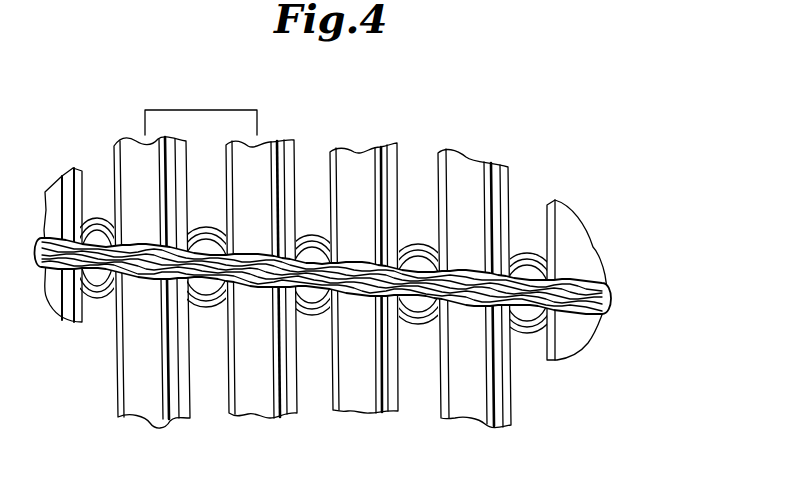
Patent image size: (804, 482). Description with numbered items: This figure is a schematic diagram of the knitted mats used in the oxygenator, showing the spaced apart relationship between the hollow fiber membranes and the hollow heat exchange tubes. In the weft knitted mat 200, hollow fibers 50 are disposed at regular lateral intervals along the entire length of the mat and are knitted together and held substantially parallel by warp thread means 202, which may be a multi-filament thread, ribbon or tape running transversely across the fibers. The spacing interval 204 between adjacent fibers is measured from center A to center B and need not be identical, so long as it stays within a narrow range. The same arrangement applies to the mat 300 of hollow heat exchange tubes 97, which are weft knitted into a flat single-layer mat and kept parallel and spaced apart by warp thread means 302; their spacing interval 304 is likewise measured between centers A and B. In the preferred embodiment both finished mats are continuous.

The weft knitted mat 200 is at (373, 255).
The mat 300 is at (432, 133).
The hollow fiber membrane 50 is at (338, 294).
The hollow heat exchange tube 97 is at (486, 160).
The warp thread means 202 is at (373, 271).
The warp thread means 302 is at (533, 256).
The spacing interval 204 is at (205, 97).
The spacing interval 304 is at (182, 111).